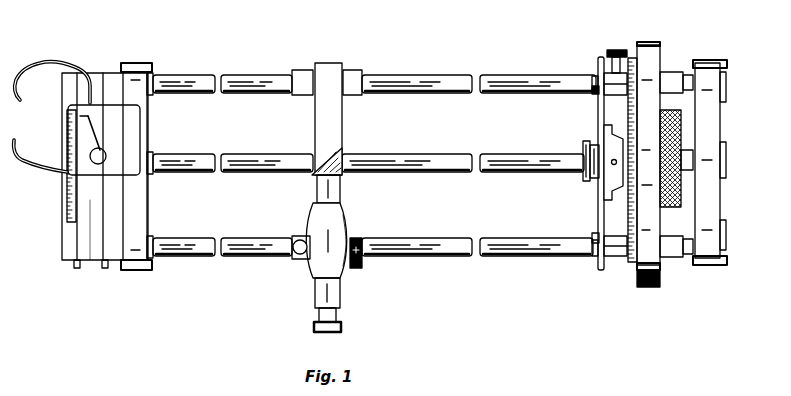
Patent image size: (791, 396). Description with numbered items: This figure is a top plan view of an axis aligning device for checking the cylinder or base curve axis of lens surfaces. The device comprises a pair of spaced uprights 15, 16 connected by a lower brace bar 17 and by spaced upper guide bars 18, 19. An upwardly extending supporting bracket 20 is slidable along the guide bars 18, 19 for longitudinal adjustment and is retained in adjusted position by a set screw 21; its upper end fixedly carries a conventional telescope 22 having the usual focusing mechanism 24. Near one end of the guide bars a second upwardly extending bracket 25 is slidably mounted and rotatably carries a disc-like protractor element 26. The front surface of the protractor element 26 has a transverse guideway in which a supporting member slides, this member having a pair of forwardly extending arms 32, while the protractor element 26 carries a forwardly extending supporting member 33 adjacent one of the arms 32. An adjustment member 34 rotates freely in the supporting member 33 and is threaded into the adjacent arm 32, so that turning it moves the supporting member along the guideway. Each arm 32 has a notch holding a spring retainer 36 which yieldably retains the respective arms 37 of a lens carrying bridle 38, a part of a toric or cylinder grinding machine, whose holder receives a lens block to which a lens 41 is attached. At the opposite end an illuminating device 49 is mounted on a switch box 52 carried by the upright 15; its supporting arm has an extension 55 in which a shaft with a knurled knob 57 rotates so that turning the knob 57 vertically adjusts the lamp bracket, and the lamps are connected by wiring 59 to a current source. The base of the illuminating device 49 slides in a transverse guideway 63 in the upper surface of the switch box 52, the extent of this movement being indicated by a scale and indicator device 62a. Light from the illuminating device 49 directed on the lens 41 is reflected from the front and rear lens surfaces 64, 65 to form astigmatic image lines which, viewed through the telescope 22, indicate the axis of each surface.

The upright 15 is at (140, 63).
The upright 16 is at (715, 125).
The lower brace bar 17 is at (420, 157).
The upper guide bar 18 is at (425, 240).
The upper guide bar 19 is at (440, 74).
The supporting bracket 20 is at (336, 122).
The set screw 21 is at (298, 261).
The telescope 22 is at (348, 222).
The focusing mechanism 24 is at (364, 262).
The second upwardly extending bracket 25 is at (656, 285).
The protractor element 26 is at (632, 268).
The forwardly extending arm 32 is at (595, 86).
The supporting member 33 is at (637, 47).
The adjustment member 34 is at (615, 50).
The spring retainer 36 is at (595, 93).
The arm 37 is at (598, 107).
The lens carrying bridle 38 is at (597, 130).
The lens 41 is at (586, 181).
The illuminating device 49 is at (142, 124).
The switch box 52 is at (65, 248).
The extension 55 is at (94, 119).
The knurled knob 57 is at (104, 152).
The wiring 59 is at (18, 148).
The scale and indicator device 62a is at (70, 193).
The transverse guideway 63 is at (88, 245).
The front lens surface 64 is at (340, 168).
The rear lens surface 65 is at (341, 314).